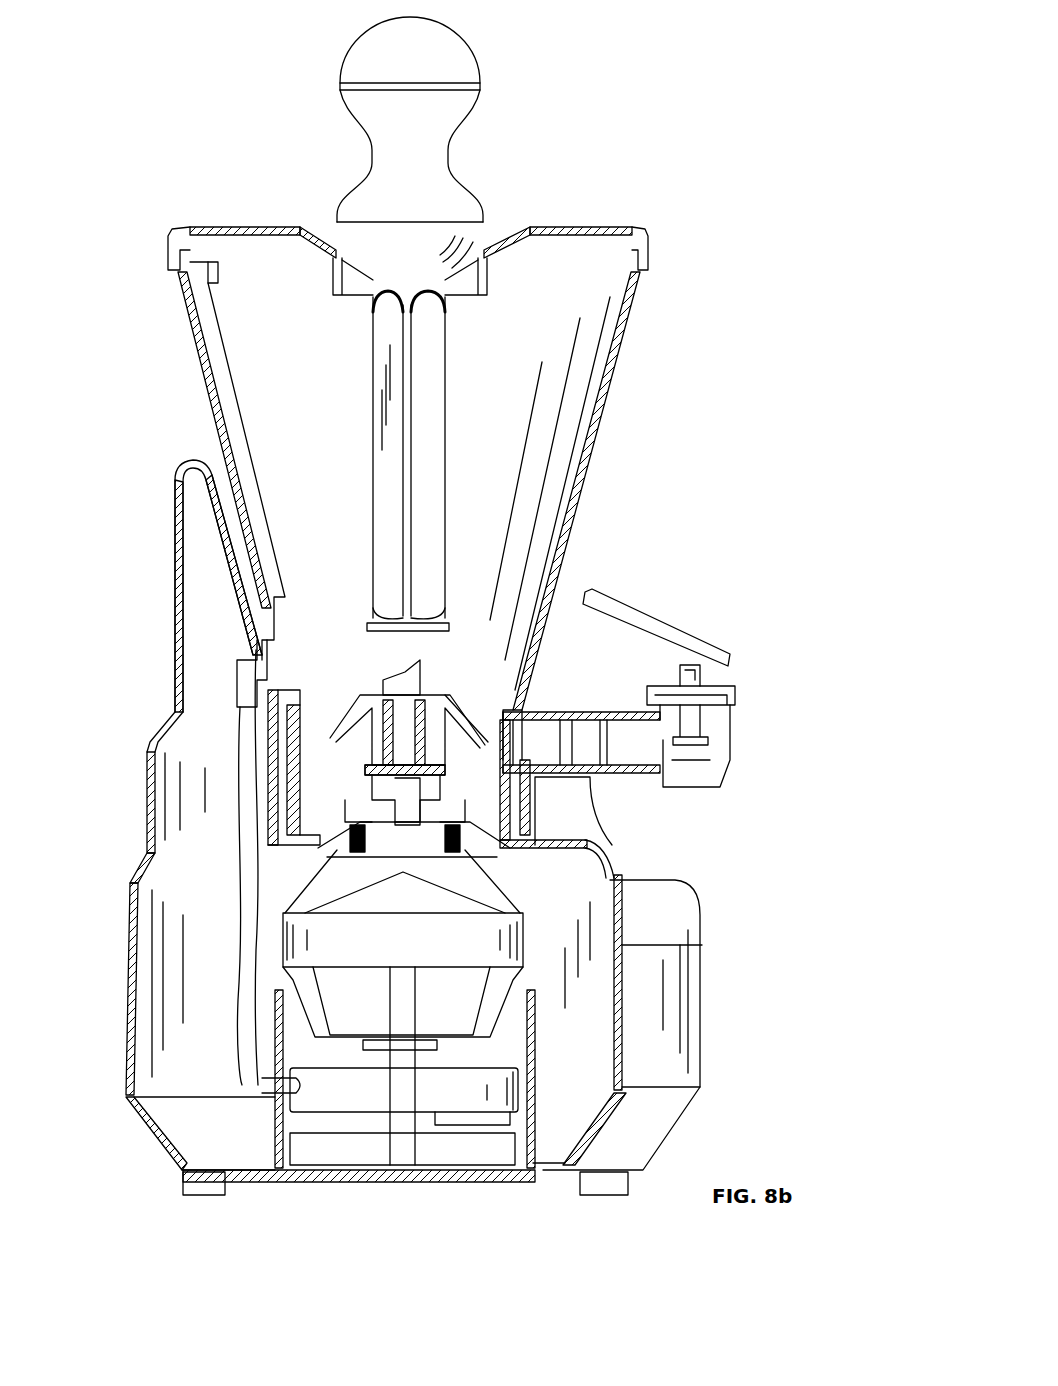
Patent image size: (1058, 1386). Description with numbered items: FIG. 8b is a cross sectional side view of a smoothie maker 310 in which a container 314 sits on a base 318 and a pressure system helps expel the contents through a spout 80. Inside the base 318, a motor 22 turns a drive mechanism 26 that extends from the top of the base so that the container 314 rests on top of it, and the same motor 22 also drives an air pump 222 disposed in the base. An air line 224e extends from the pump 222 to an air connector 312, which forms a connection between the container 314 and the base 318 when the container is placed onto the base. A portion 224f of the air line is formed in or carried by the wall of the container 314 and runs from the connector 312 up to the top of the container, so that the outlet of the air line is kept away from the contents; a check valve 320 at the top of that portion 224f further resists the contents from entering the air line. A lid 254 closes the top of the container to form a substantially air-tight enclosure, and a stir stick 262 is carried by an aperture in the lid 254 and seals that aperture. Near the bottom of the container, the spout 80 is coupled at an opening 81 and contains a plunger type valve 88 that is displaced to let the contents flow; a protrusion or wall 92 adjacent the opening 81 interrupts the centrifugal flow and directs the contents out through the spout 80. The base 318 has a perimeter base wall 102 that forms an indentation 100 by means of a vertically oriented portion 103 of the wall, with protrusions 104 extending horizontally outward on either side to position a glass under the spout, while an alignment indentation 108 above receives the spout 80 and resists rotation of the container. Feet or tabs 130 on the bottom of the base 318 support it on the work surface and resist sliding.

The stir stick 262 is at (484, 48).
The lid 254 is at (433, 439).
The check valve 320 is at (220, 268).
The portion of the air line 224f is at (228, 408).
The container 314 is at (603, 488).
The smoothie maker 310 is at (166, 606).
The air connector 312 is at (232, 690).
The base 318 is at (142, 840).
The air line 224e is at (237, 928).
The perimeter base wall 102 is at (142, 1005).
The feet or tabs 130 is at (183, 1186).
The motor 22 is at (403, 1007).
The air pump 222 is at (359, 1086).
The drive mechanism 26 is at (505, 880).
The protrusion or wall 92 is at (495, 740).
The opening 81 is at (518, 735).
The spout 80 is at (726, 640).
The plunger type valve 88 is at (712, 745).
The alignment indentation 108 is at (563, 800).
The vertically oriented portion of the perimeter base wall 103 is at (700, 942).
The protrusions 104 is at (700, 977).
The indentation 100 is at (647, 1013).